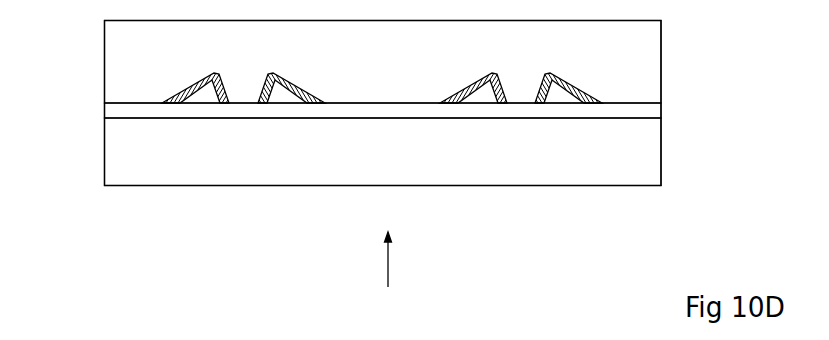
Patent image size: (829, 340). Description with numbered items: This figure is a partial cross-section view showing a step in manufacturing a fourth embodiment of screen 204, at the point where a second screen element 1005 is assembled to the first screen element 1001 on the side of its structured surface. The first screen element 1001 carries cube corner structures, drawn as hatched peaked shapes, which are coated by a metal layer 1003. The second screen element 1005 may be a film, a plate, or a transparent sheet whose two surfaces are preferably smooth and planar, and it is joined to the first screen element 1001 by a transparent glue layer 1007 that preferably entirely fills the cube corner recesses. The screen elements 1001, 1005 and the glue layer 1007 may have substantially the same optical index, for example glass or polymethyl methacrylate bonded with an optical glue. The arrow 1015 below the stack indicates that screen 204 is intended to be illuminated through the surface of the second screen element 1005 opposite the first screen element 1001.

The screen 204 is at (691, 174).
The first screen element 1001 is at (118, 53).
The metal layer 1003 is at (183, 94).
The transparent glue layer 1007 is at (115, 112).
The second screen element 1005 is at (115, 163).
The arrow 1015 is at (388, 267).